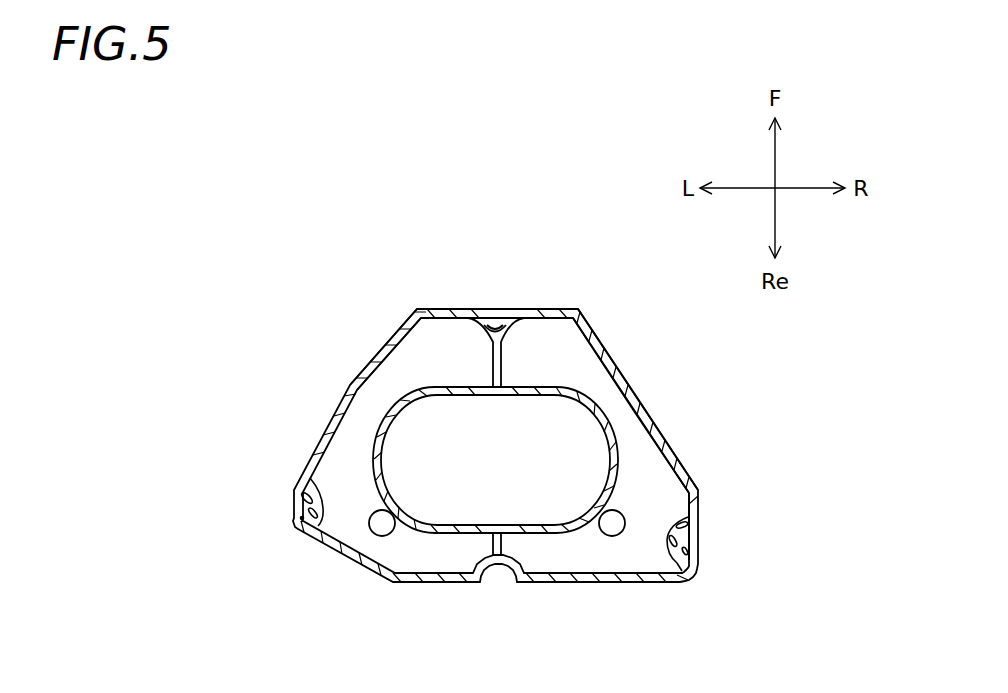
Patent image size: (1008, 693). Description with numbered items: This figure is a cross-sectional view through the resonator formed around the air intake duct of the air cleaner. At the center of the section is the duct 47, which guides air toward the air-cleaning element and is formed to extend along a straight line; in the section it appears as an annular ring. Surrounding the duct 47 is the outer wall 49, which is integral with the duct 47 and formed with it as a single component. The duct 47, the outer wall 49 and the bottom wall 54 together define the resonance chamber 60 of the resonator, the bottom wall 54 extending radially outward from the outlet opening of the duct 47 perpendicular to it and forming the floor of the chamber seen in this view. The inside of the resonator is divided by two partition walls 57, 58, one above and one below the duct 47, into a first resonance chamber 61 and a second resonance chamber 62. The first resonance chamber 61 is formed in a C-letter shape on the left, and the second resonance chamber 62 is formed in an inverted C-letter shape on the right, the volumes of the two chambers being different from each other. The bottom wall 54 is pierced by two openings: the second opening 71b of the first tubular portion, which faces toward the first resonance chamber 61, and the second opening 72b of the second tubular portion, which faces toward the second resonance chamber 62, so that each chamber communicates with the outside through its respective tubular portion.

The duct 47 is at (617, 460).
The outer wall 49 is at (660, 413).
The bottom wall 54 is at (660, 483).
The partition wall 57 is at (500, 545).
The partition wall 58 is at (497, 363).
The resonance chamber 60 is at (366, 430).
The first resonance chamber 61 is at (413, 360).
The second resonance chamber 62 is at (575, 360).
The second opening 71b is at (382, 537).
The second opening 72b is at (613, 537).